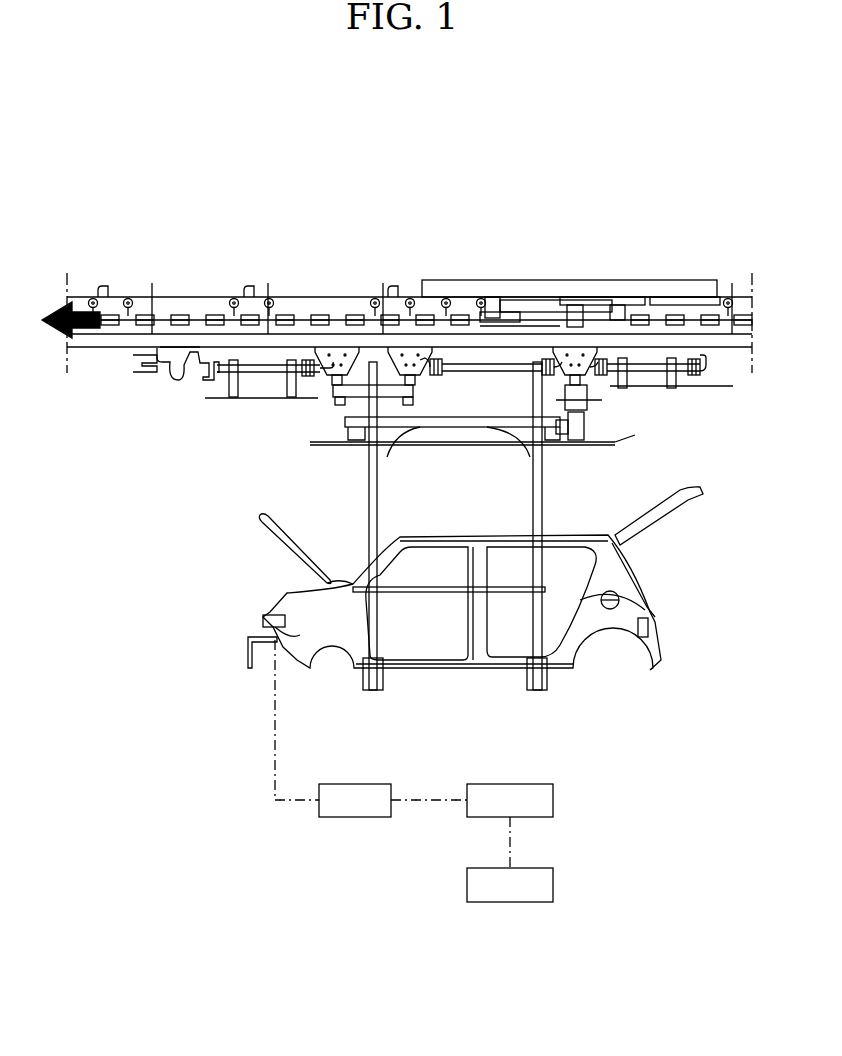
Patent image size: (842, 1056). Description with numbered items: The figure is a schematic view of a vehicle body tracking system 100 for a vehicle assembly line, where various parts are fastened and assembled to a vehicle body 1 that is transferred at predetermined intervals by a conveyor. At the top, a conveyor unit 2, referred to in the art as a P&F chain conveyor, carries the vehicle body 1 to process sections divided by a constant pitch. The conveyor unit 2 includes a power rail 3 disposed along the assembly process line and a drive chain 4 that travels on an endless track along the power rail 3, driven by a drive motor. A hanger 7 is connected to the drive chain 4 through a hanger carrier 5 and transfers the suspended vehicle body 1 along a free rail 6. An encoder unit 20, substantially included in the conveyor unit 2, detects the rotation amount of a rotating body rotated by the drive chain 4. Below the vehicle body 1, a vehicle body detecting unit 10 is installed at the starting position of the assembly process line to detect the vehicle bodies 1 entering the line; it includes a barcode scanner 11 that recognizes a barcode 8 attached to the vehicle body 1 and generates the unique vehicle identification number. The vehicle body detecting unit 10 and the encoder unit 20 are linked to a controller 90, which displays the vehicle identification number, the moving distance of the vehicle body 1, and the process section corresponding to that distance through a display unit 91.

The vehicle body tracking system 100 is at (378, 135).
The vehicle body 1 is at (594, 533).
The conveyor unit 2 is at (297, 280).
The power rail 3 is at (350, 297).
The drive chain 4 is at (428, 300).
The hanger carrier 5 is at (322, 372).
The free rail 6 is at (212, 373).
The hanger 7 is at (368, 493).
The barcode 8 is at (262, 620).
The vehicle body detecting unit 10 is at (346, 830).
The barcode scanner 11 is at (340, 784).
The encoder unit 20 is at (632, 272).
The controller 90 is at (554, 800).
The display unit 91 is at (554, 884).